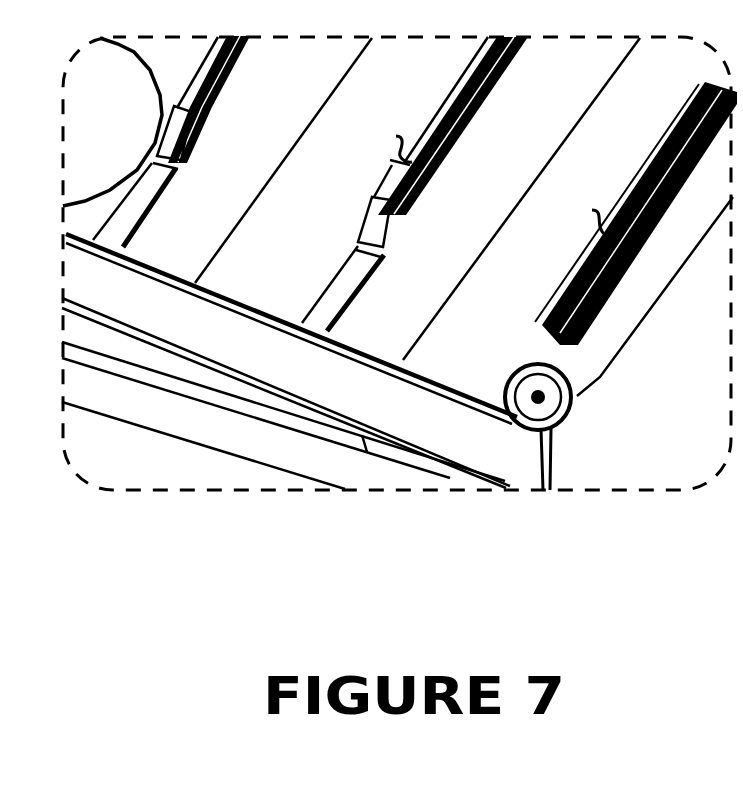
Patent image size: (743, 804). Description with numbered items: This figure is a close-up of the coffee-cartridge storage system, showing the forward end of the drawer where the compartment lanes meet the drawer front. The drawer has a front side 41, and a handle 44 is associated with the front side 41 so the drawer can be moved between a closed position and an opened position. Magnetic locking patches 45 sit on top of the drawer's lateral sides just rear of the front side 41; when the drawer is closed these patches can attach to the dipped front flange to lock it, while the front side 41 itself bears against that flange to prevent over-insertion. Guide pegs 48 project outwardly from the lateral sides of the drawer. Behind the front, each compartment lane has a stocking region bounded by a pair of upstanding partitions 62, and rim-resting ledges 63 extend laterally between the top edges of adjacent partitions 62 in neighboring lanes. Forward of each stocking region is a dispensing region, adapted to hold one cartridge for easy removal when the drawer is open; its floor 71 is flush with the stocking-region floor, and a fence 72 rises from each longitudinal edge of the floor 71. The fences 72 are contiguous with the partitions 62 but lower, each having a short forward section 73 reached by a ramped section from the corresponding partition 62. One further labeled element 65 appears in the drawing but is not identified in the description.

The front side 41 is at (289, 361).
The handle 44 is at (538, 427).
The magnetic locking patches 45 is at (538, 397).
The guide pegs 48 is at (395, 198).
The partitions 62 is at (622, 239).
The rim-resting ledges 63 is at (494, 180).
The wheel 65 is at (198, 82).
The floor 71 is at (417, 199).
The fence 72 is at (346, 163).
The short forward section 73 is at (238, 247).